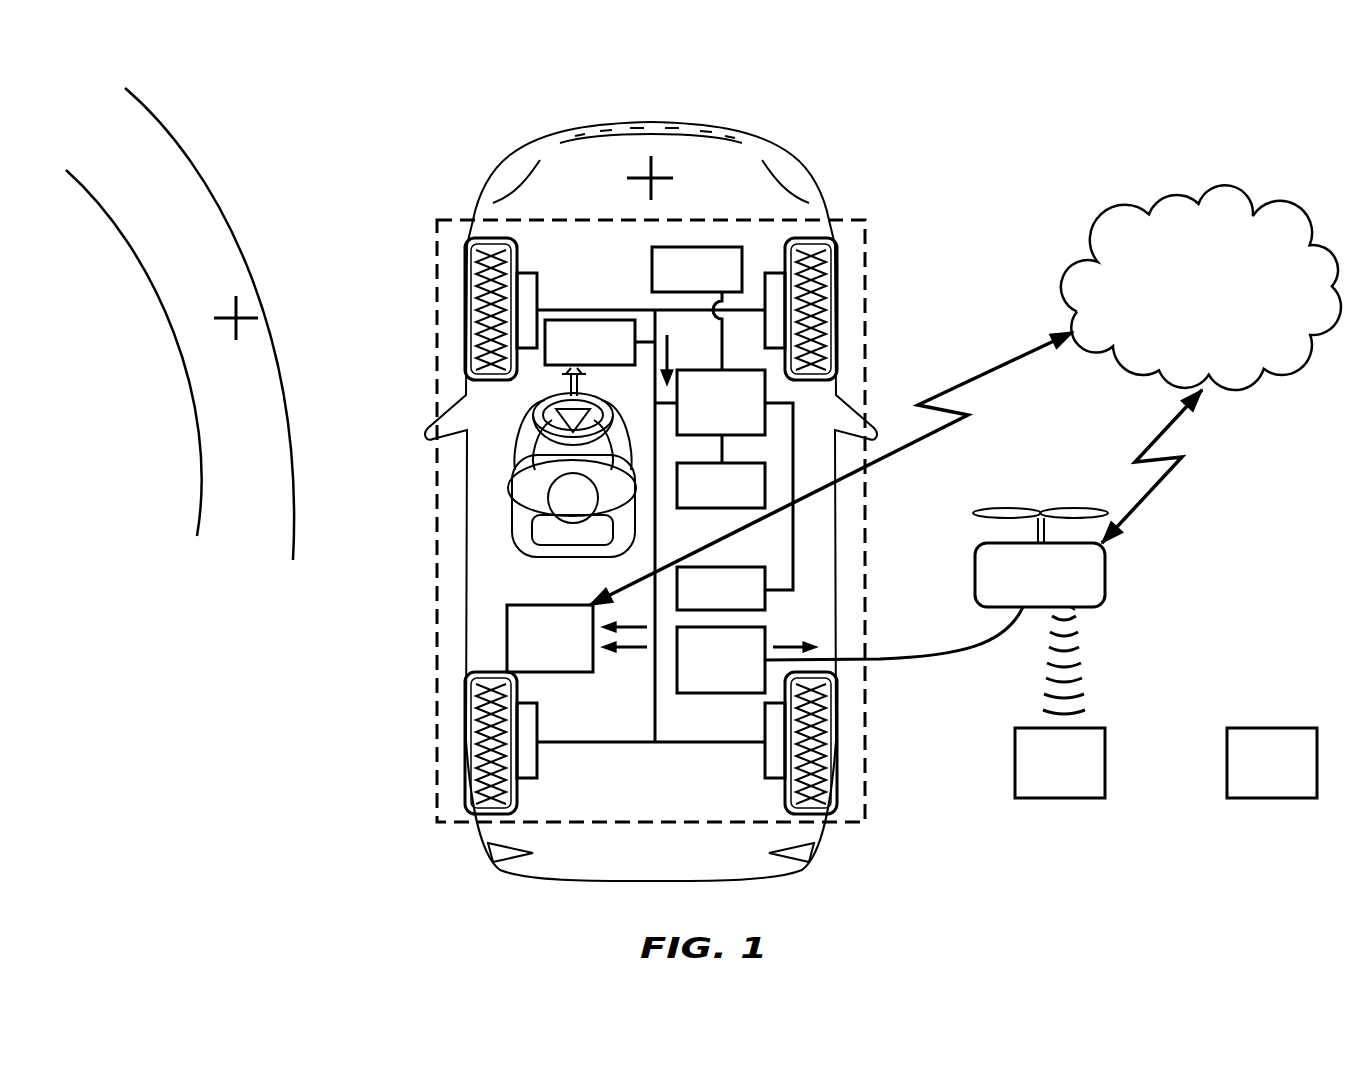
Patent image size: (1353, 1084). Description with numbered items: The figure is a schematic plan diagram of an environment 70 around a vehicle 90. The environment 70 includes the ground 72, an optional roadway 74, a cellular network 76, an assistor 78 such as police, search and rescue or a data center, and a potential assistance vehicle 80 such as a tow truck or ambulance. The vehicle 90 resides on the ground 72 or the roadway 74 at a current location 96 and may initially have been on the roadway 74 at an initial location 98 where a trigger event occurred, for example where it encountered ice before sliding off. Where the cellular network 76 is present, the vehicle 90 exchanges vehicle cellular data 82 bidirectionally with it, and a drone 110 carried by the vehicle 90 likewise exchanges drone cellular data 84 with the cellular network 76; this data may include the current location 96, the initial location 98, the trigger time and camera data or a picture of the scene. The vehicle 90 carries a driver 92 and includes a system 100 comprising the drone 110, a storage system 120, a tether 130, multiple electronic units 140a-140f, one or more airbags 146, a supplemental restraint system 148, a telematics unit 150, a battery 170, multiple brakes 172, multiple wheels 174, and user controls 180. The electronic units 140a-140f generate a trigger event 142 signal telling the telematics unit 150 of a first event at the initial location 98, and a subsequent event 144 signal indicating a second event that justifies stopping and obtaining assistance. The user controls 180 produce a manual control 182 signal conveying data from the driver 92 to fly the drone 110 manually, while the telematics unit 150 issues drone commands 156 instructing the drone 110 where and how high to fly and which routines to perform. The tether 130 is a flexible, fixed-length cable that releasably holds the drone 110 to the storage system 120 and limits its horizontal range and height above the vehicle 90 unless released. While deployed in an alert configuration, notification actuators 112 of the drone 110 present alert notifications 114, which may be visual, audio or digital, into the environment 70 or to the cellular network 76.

The environment 70 is at (418, 100).
The ground 72 is at (347, 236).
The roadway 74 is at (238, 204).
The cellular network 76 is at (1090, 237).
The assistor 78 is at (1074, 784).
The potential assistance vehicle 80 is at (1286, 784).
The vehicle cellular data 82 is at (1015, 355).
The drone cellular data 84 is at (1155, 440).
The vehicle 90 is at (518, 134).
The driver 92 is at (512, 500).
The current location 96 is at (656, 182).
The initial location 98 is at (243, 316).
The system 100 is at (455, 204).
The drone 110 is at (975, 575).
The notification actuator 112 is at (1080, 607).
The alert notification 114 is at (1088, 706).
The storage system 120 is at (742, 681).
The tether 130 is at (923, 663).
The electronic units 140a-140f is at (750, 407).
The trigger event 142 is at (645, 622).
The subsequent event 144 is at (645, 688).
The airbag 146 is at (742, 507).
The supplemental restraint system 148 is at (742, 610).
The telematics unit 150 is at (571, 660).
The drone commands 156 is at (815, 642).
The battery 170 is at (718, 291).
The brakes 172 is at (538, 297).
The wheels 174 is at (465, 283).
The user controls 180 is at (611, 364).
The manual control 182 is at (715, 358).